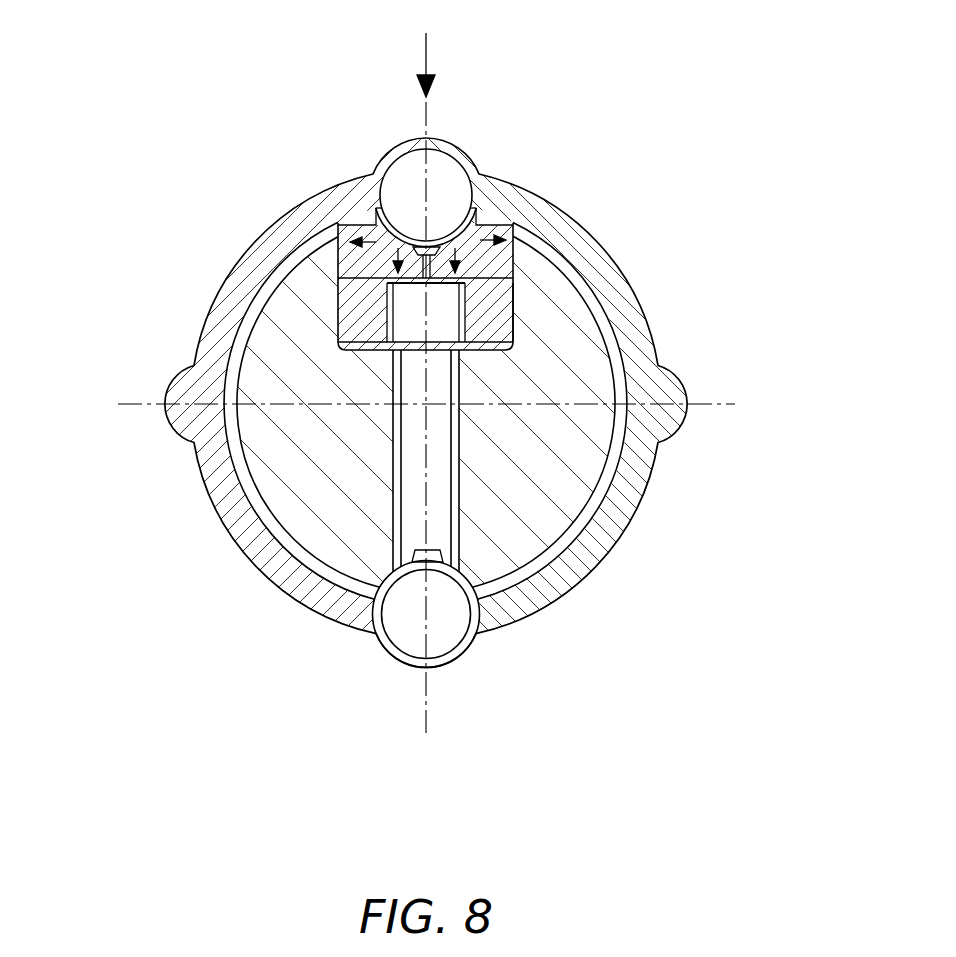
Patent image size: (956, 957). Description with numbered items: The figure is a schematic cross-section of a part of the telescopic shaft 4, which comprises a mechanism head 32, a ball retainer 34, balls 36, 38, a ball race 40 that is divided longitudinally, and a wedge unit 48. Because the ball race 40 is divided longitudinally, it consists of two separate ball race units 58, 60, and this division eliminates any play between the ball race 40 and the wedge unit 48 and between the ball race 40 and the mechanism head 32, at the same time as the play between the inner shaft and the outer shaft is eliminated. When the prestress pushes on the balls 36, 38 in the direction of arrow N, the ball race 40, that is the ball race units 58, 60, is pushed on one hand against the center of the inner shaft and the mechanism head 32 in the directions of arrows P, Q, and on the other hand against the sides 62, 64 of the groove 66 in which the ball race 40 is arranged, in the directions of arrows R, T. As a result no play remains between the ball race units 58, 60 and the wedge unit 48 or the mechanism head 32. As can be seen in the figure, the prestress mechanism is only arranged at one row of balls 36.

The telescopic shaft 4 is at (274, 652).
The mechanism head 32 is at (517, 530).
The ball retainer 34 is at (610, 512).
The ball 36 is at (447, 162).
The ball 38 is at (437, 647).
The ball race 40 is at (483, 267).
The wedge unit 48 is at (487, 332).
The ball race unit 58 is at (372, 230).
The ball race unit 60 is at (473, 208).
The side of the groove 62 is at (343, 247).
The side of the groove 64 is at (513, 245).
The groove 66 is at (390, 283).
The arrow N is at (426, 52).
The arrow R is at (366, 246).
The arrow T is at (490, 246).
The arrow P is at (400, 244).
The arrow Q is at (458, 253).